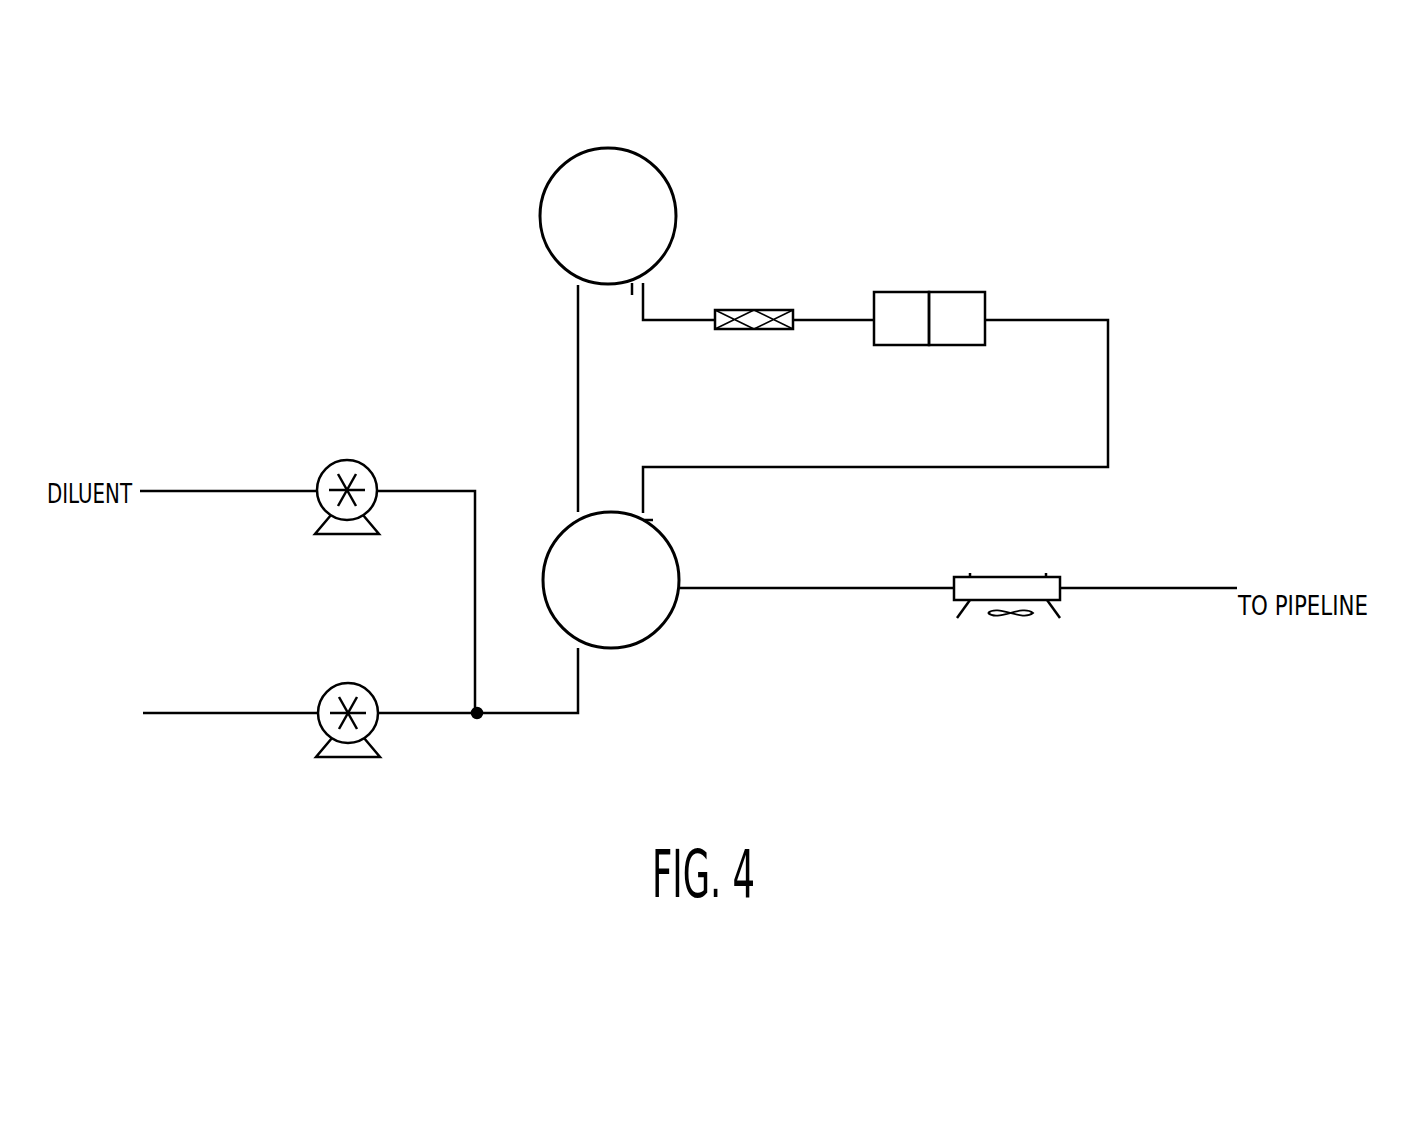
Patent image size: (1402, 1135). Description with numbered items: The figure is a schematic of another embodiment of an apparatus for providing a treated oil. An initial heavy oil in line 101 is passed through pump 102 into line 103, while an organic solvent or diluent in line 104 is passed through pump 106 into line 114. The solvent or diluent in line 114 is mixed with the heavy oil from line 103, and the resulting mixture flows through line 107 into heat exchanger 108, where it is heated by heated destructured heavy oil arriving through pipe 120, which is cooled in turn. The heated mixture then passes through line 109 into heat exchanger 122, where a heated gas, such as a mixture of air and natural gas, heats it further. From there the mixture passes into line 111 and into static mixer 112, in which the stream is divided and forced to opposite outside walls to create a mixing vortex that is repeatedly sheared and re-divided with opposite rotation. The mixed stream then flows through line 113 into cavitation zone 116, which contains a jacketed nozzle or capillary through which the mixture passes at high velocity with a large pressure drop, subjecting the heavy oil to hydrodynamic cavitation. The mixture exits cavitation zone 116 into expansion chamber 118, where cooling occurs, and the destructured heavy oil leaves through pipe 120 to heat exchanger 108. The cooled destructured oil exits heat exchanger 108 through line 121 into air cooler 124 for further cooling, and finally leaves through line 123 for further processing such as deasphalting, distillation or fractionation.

The line 101 is at (213, 717).
The pump 102 is at (322, 690).
The line 103 is at (422, 713).
The line 104 is at (248, 490).
The pump 106 is at (333, 462).
The line 107 is at (540, 717).
The heat exchanger 108 is at (648, 640).
The line 109 is at (577, 373).
The line 111 is at (646, 298).
The static mixer 112 is at (740, 310).
The line 113 is at (823, 320).
The line 114 is at (432, 490).
The cavitation zone 116 is at (900, 300).
The expansion chamber 118 is at (960, 305).
The pipe 120 is at (1110, 385).
The line 121 is at (817, 588).
The heat exchanger 122 is at (555, 173).
The line 123 is at (1200, 586).
The air cooler 124 is at (1010, 577).